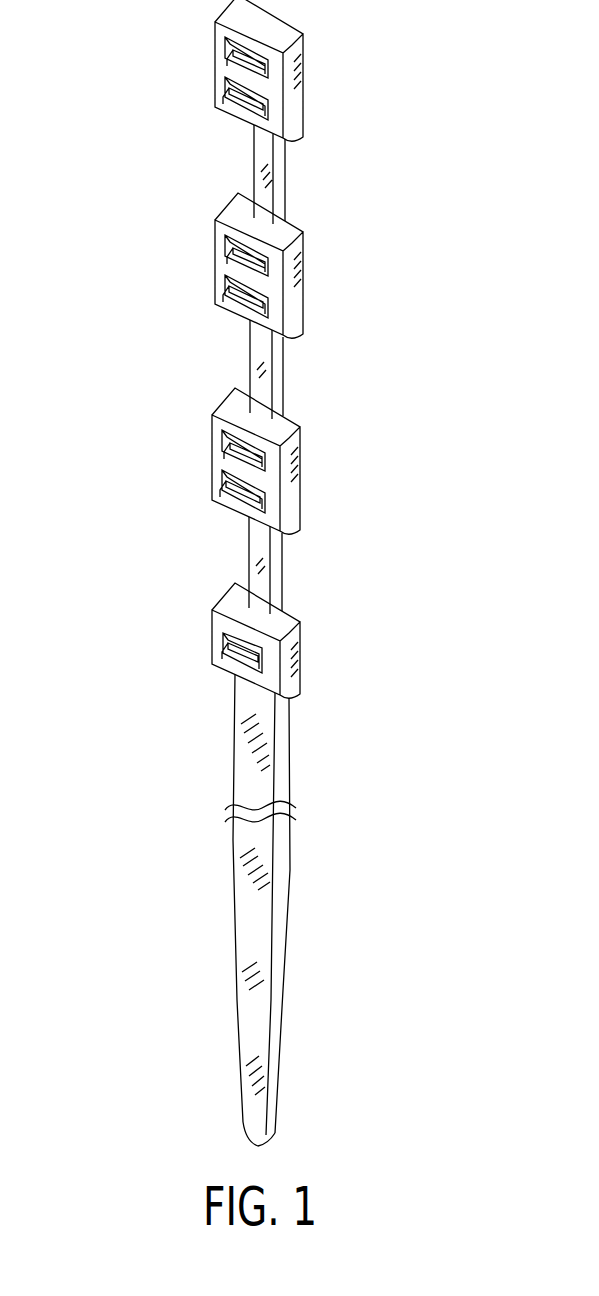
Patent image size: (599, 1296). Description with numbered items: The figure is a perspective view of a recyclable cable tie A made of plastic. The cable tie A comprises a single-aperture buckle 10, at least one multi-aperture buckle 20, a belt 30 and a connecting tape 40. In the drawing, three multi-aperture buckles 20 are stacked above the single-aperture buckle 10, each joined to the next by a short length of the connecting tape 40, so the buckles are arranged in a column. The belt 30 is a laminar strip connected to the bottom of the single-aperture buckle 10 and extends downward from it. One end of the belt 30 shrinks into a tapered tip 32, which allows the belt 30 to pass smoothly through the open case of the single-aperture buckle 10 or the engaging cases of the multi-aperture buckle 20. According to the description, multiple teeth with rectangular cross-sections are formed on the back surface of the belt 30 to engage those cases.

The recyclable cable tie A is at (141, 241).
The single-aperture buckle 10 is at (327, 651).
The multi-aperture buckle 20 is at (329, 80).
The belt 30 is at (283, 767).
The tapered tip 32 is at (255, 1115).
The connecting tape 40 is at (285, 193).